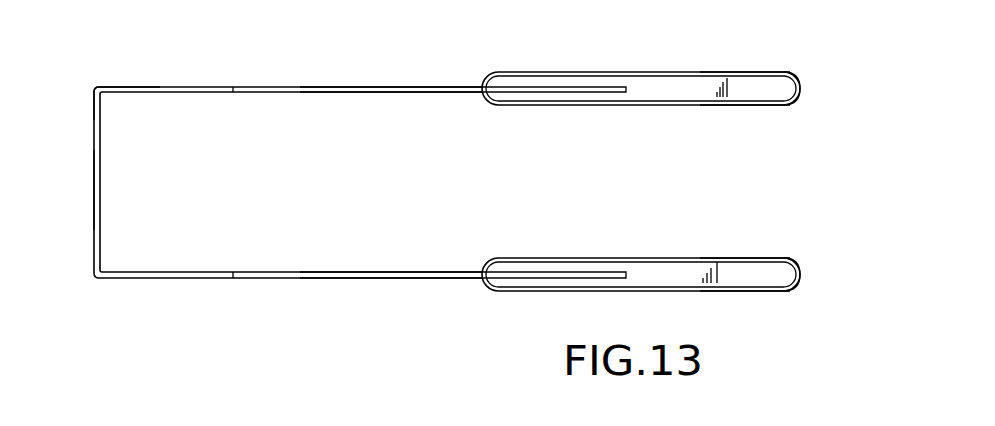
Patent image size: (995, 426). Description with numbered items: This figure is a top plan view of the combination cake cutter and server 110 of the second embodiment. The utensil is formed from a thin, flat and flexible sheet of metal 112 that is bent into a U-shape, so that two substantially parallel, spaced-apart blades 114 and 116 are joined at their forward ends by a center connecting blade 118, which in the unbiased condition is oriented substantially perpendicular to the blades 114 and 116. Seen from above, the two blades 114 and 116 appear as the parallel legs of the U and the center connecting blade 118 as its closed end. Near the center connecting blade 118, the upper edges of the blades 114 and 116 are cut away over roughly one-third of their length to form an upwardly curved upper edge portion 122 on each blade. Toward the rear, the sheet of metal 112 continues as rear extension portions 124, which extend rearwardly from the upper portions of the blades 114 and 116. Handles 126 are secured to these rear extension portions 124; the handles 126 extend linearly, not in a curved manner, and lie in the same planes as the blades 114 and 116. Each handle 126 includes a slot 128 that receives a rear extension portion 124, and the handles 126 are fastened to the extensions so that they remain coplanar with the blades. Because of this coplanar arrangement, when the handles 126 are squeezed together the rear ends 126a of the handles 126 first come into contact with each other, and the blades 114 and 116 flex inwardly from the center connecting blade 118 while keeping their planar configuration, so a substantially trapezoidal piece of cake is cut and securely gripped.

The combination cake cutter and server 110 is at (68, 118).
The thin, flat and flexible sheet of metal 112 is at (307, 88).
The blade 114 is at (457, 85).
The blade 116 is at (357, 278).
The center connecting blade 118 is at (98, 205).
The upwardly curved upper edge portion 122 is at (182, 87).
The rear extension portions 124 is at (599, 88).
The handles 126 is at (717, 73).
The rear ends of handles 126a is at (797, 76).
The slots 128 is at (553, 87).